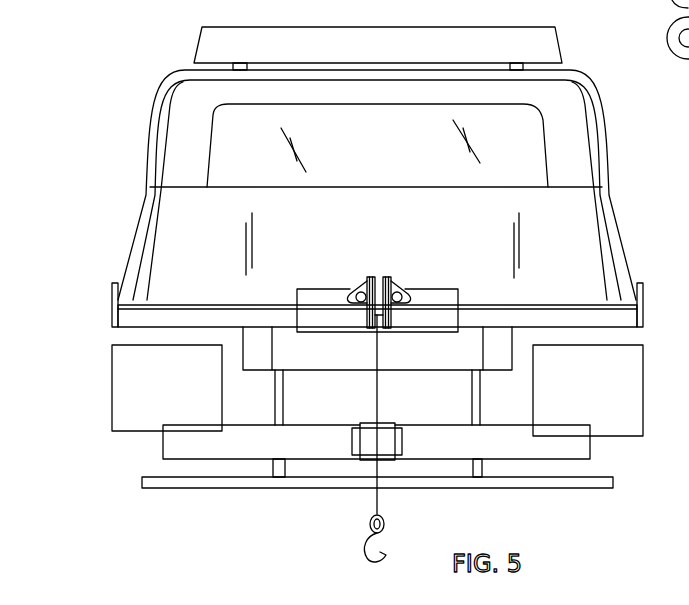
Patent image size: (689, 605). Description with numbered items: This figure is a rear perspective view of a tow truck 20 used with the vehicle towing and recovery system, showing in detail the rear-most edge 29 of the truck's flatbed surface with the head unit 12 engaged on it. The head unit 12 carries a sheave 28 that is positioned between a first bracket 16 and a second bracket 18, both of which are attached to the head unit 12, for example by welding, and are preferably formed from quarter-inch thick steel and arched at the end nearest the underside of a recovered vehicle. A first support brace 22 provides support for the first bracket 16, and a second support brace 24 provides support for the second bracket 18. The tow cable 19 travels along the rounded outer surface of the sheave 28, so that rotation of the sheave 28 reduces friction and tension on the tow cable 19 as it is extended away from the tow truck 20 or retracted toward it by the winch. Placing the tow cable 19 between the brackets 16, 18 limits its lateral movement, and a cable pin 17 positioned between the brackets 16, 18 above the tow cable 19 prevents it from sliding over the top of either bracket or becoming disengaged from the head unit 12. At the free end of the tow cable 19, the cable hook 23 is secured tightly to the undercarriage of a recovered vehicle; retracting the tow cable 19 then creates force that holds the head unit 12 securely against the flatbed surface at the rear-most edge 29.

The tow truck 20 is at (112, 108).
The head unit 12 is at (342, 318).
The first bracket 16 is at (399, 288).
The cable pin 17 is at (367, 277).
The second bracket 18 is at (361, 290).
The tow cable 19 is at (378, 408).
The first support brace 22 is at (410, 298).
The cable hook 23 is at (363, 553).
The second support brace 24 is at (347, 298).
The sheave 28 is at (385, 277).
The rear-most edge 29 is at (587, 305).